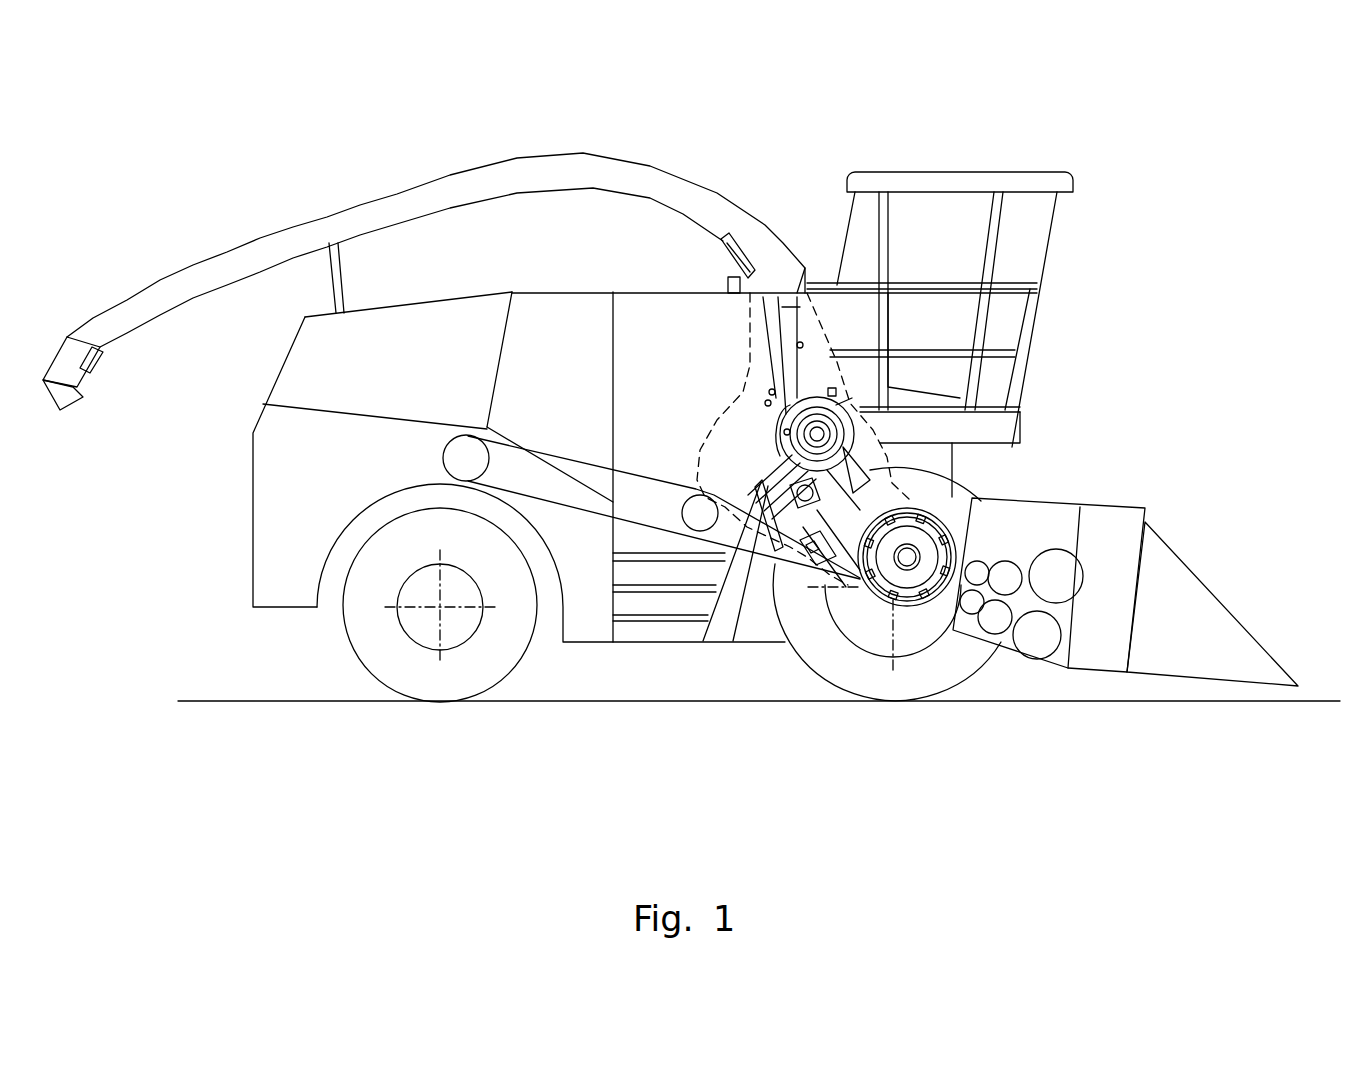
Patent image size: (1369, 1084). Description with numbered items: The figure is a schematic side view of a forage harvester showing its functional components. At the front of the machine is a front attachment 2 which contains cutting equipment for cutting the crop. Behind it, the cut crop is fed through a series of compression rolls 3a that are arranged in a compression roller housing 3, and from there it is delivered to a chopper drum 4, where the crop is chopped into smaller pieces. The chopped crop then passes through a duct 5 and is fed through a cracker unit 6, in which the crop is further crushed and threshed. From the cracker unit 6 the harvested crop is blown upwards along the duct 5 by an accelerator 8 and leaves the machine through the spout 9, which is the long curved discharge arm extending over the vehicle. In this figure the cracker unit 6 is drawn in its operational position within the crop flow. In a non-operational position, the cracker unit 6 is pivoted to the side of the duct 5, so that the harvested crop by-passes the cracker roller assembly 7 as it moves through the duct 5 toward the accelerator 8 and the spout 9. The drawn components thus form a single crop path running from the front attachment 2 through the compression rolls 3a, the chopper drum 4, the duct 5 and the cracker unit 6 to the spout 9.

The front attachment 2 is at (1195, 607).
The compression roller housing 3 is at (1052, 522).
The compression rolls 3a is at (1060, 572).
The chopper drum 4 is at (928, 600).
The duct 5 is at (803, 292).
The cracker unit 6 is at (880, 453).
The cracker roller assembly 7 is at (764, 490).
The accelerator 8 is at (880, 443).
The spout 9 is at (588, 173).